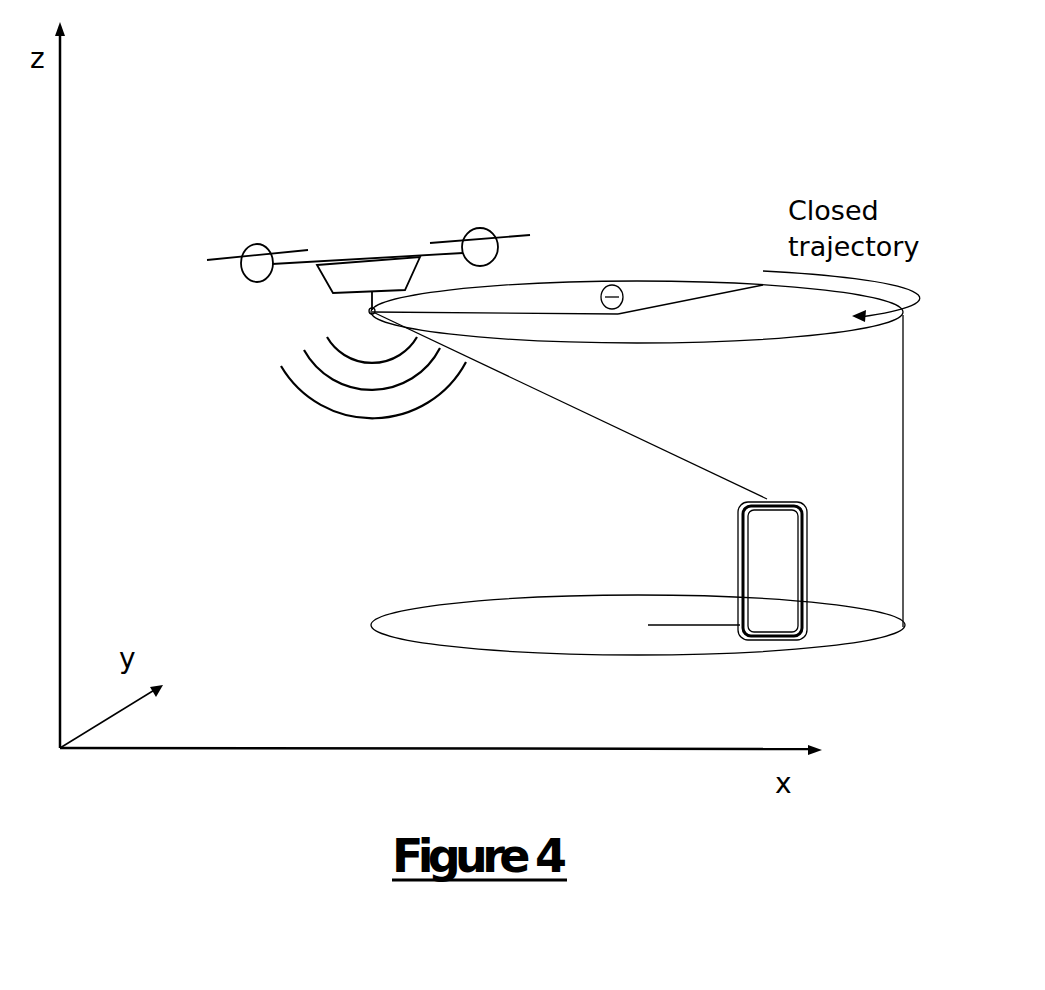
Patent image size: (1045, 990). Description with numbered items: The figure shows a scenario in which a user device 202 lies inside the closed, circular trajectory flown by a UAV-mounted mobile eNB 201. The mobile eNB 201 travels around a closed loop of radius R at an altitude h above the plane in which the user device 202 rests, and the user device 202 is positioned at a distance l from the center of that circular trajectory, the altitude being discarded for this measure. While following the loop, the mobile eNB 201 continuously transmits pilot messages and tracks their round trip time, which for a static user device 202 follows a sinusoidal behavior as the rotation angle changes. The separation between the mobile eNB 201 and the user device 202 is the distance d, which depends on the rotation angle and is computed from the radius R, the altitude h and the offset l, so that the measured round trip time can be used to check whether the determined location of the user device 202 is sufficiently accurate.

The mobile eNB 201 is at (363, 267).
The user device 202 is at (757, 552).
The radius of the closed trajectory R is at (567, 297).
The altitude h is at (926, 471).
The distance d is at (571, 406).
The distance from trajectory center l is at (698, 617).